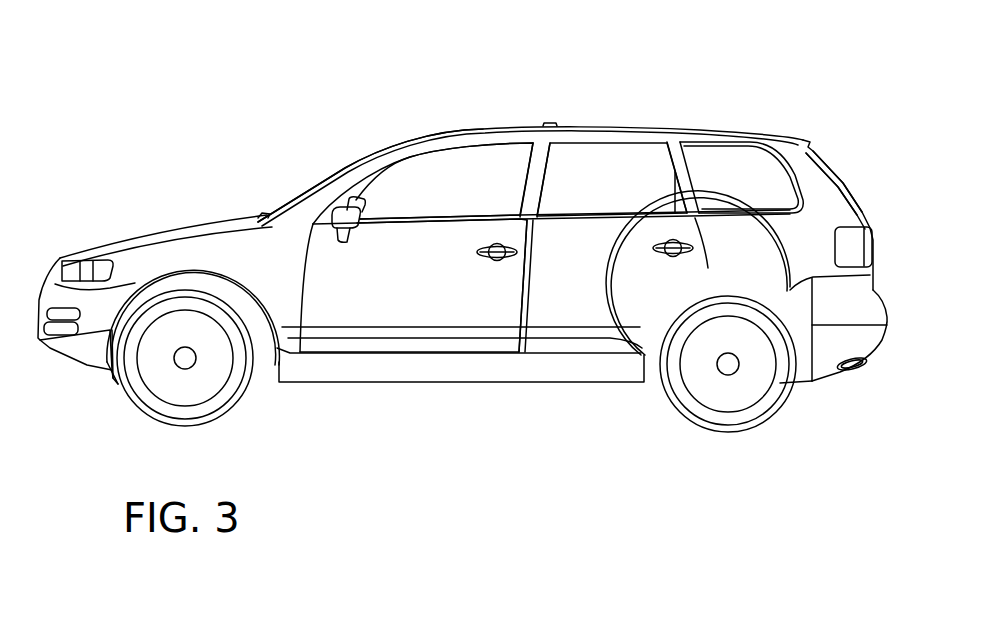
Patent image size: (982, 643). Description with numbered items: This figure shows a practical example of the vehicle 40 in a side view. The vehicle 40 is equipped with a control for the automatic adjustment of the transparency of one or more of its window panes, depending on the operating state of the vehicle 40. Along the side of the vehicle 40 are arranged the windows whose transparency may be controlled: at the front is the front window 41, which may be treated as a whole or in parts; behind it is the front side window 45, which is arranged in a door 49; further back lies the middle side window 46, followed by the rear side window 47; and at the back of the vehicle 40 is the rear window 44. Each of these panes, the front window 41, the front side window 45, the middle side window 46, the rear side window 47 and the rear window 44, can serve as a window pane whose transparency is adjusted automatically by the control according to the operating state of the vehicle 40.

The vehicle 40 is at (139, 145).
The front window 41 is at (337, 173).
The rear window 44 is at (839, 177).
The front side window 45 is at (458, 174).
The middle side window 46 is at (607, 174).
The rear side window 47 is at (728, 176).
The door 49 is at (431, 285).